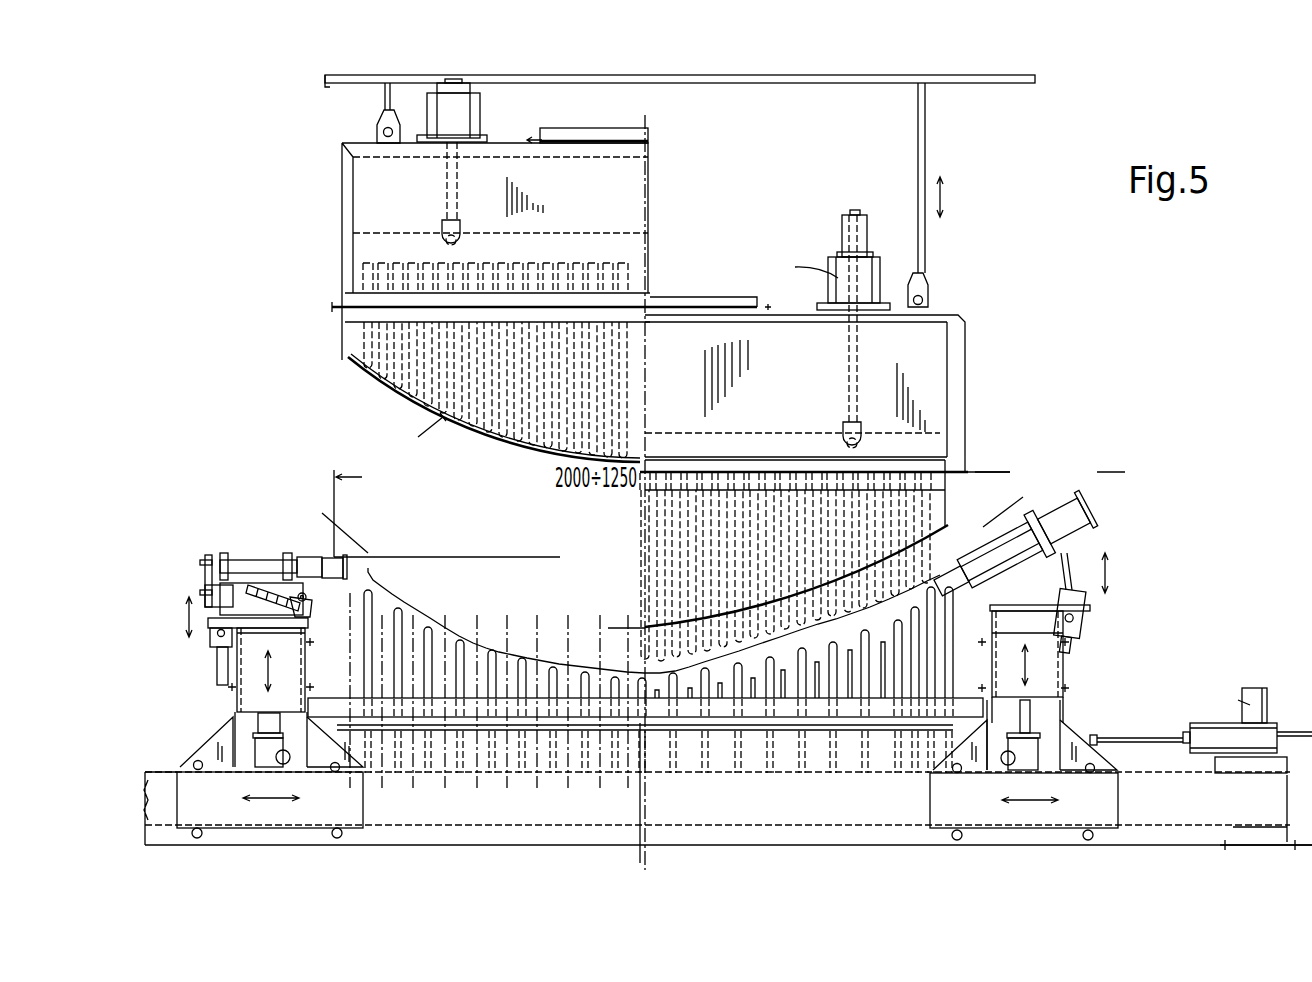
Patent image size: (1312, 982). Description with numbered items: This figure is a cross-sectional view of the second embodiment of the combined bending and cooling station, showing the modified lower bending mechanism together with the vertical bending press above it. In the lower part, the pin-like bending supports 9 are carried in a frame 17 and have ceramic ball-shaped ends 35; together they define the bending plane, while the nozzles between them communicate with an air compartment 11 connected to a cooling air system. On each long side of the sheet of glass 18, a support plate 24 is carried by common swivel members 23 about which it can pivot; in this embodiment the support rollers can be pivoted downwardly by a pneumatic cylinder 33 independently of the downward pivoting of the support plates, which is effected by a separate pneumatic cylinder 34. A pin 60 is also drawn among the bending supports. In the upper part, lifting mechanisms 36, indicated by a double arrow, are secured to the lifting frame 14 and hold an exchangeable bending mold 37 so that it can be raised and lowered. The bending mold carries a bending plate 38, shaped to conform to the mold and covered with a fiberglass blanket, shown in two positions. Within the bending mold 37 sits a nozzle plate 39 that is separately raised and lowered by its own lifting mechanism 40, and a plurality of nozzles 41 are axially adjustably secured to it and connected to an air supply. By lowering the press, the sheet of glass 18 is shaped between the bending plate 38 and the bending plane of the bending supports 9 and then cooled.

The bending supports 9 is at (397, 650).
The air compartment 11 is at (832, 816).
The lifting frame 14 is at (332, 78).
The frame 17 is at (965, 707).
The sheet of glass 18 is at (488, 555).
The swivel members 23 is at (307, 612).
The support plate 24 is at (260, 623).
The pneumatic cylinder 33 is at (212, 647).
The pneumatic cylinder 34 is at (262, 588).
The ceramic ball-shaped ends 35 is at (397, 603).
The lifting mechanisms 36 is at (928, 128).
The bending mold 37 is at (350, 328).
The bending plate 38 is at (397, 397).
The nozzle plate 39 is at (410, 267).
The lifting mechanism 40 is at (450, 195).
The nozzles 41 is at (875, 268).
The pin 60 is at (370, 570).